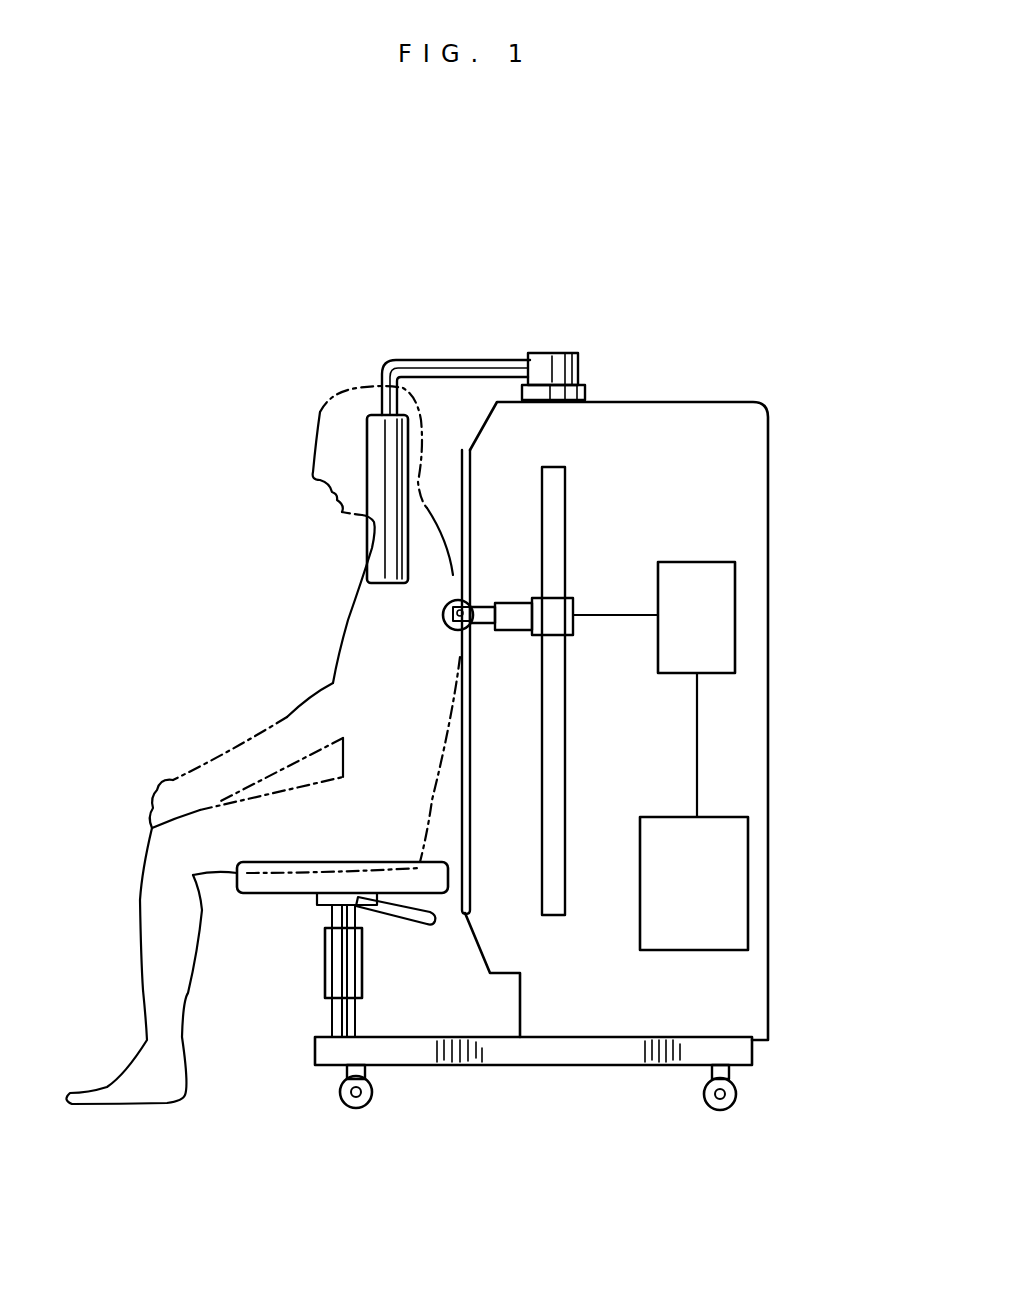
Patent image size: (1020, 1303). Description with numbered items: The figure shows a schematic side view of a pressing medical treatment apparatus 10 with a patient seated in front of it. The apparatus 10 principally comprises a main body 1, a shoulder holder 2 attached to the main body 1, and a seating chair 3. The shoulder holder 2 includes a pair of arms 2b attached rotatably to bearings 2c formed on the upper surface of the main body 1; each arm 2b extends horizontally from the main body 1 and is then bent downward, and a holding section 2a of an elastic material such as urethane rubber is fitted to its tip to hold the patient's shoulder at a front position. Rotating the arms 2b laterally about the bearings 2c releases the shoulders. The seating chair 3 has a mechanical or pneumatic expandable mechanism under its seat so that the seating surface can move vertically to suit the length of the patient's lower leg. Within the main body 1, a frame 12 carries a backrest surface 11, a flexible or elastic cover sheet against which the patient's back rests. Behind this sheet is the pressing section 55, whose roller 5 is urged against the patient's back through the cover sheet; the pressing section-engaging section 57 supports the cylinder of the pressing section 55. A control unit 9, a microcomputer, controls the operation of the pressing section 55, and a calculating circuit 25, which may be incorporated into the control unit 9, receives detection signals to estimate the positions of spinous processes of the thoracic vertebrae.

The main body 1 is at (760, 310).
The shoulder holder 2 is at (458, 347).
The holding sections 2a is at (363, 456).
The arms 2b is at (483, 358).
The bearings 2c is at (587, 388).
The seating chair 3 is at (285, 900).
The roller 5 is at (442, 612).
The control unit 9 is at (748, 877).
The pressing medical treatment apparatus 10 is at (387, 300).
The backrest surface 11 is at (460, 697).
The frame 12 is at (768, 705).
The calculating circuit 25 is at (735, 580).
The pressing section 55 is at (573, 600).
The pressing section-engaging section 57 is at (573, 636).